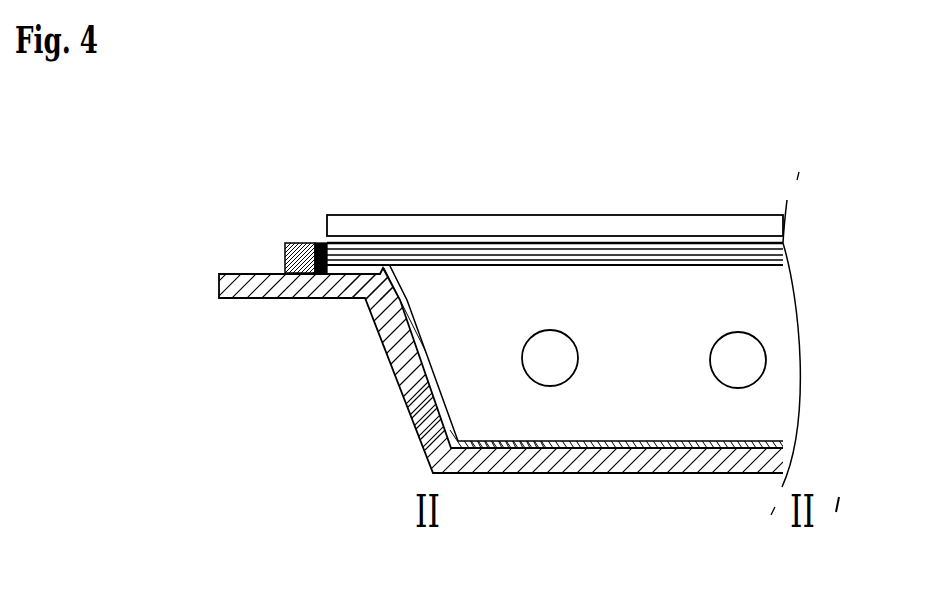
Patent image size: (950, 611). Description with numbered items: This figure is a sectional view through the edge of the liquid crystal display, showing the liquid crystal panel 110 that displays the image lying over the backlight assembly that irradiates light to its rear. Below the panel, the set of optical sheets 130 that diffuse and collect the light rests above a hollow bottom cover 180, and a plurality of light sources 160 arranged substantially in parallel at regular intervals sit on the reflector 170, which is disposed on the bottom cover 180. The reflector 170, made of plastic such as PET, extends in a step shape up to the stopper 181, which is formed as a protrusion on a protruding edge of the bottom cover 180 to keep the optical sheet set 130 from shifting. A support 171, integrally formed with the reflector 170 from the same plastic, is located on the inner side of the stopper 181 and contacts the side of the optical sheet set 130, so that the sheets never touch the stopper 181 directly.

The liquid crystal panel 110 is at (658, 225).
The optical sheet set 130 is at (790, 250).
The light sources 160 is at (731, 380).
The reflector 170 is at (790, 442).
The support 171 is at (320, 243).
The bottom cover 180 is at (508, 473).
The stopper 181 is at (283, 257).